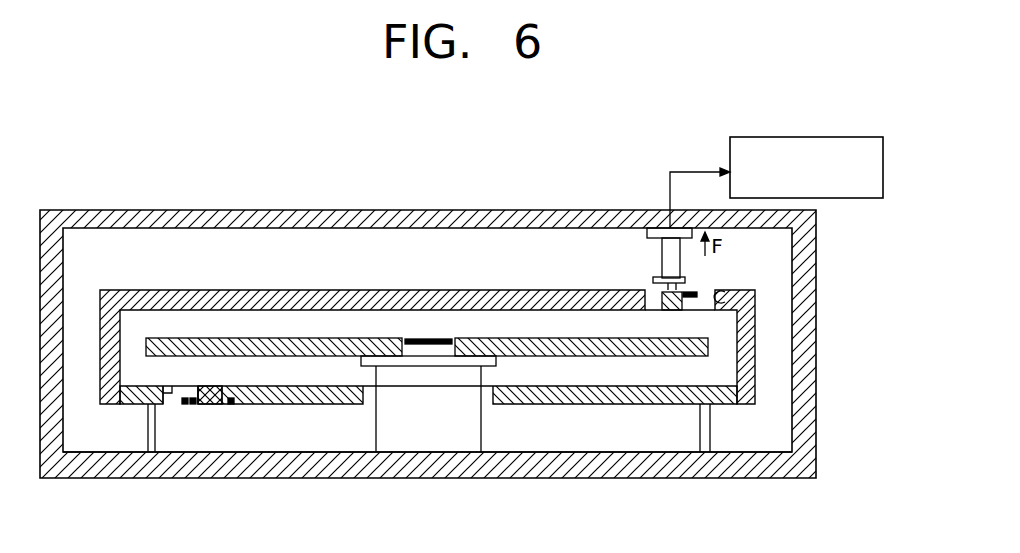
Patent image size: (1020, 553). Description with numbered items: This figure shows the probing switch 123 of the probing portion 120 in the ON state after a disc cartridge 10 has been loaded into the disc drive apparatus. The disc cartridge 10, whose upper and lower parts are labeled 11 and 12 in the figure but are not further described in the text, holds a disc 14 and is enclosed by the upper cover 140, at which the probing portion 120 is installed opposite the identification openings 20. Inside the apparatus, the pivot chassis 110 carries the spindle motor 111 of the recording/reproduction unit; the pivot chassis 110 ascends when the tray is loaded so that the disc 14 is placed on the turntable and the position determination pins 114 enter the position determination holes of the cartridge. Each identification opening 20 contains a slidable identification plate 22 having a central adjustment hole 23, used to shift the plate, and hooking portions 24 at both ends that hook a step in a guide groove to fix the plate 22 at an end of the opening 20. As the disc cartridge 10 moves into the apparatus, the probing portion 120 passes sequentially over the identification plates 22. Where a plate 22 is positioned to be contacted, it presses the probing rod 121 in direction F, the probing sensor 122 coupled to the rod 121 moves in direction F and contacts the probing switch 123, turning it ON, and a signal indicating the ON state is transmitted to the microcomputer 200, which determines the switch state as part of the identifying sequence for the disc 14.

The disc cartridge 10 is at (490, 390).
The cassette lid 11 is at (370, 300).
The cassette body 12 is at (737, 398).
The disc 14 is at (298, 338).
The identification opening 20 is at (172, 390).
The identification plate 22 is at (214, 386).
The adjustment hole 23 is at (217, 405).
The hooking portion 24 is at (187, 405).
The pivot chassis 110 is at (620, 466).
The spindle motor 111 is at (445, 440).
The position determination pin 114 is at (148, 430).
The probing portion 120 is at (662, 213).
The probing rod 121 is at (688, 283).
The probing sensor 122 is at (655, 285).
The probing switch 123 is at (641, 210).
The upper cover 140 is at (120, 212).
The microcomputer 200 is at (798, 137).